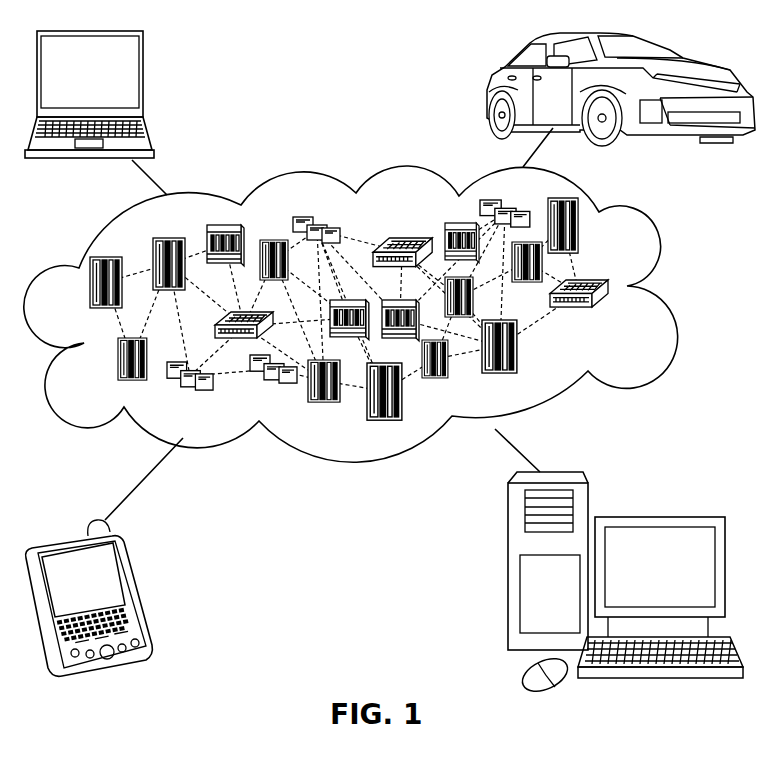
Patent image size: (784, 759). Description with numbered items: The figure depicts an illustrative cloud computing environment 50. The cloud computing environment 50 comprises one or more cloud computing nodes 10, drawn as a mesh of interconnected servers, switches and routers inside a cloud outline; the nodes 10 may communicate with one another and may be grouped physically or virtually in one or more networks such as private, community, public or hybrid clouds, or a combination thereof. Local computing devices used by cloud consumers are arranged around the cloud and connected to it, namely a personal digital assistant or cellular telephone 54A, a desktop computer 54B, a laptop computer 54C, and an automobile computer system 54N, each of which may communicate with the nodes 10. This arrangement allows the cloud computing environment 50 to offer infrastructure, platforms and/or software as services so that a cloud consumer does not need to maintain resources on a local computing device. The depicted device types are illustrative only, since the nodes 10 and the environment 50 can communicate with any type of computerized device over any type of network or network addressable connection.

The cloud computing nodes 10 is at (615, 315).
The cloud computing environment 50 is at (627, 293).
The personal digital assistant or cellular telephone 54A is at (135, 587).
The desktop computer 54B is at (662, 515).
The laptop computer 54C is at (143, 80).
The automobile computer system 54N is at (488, 95).